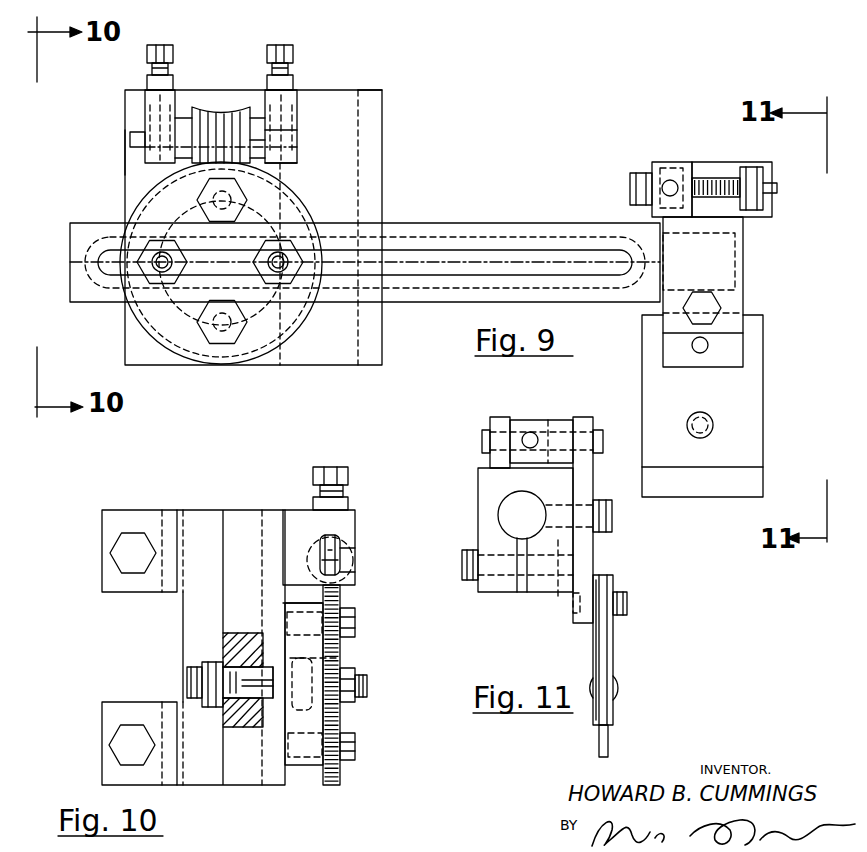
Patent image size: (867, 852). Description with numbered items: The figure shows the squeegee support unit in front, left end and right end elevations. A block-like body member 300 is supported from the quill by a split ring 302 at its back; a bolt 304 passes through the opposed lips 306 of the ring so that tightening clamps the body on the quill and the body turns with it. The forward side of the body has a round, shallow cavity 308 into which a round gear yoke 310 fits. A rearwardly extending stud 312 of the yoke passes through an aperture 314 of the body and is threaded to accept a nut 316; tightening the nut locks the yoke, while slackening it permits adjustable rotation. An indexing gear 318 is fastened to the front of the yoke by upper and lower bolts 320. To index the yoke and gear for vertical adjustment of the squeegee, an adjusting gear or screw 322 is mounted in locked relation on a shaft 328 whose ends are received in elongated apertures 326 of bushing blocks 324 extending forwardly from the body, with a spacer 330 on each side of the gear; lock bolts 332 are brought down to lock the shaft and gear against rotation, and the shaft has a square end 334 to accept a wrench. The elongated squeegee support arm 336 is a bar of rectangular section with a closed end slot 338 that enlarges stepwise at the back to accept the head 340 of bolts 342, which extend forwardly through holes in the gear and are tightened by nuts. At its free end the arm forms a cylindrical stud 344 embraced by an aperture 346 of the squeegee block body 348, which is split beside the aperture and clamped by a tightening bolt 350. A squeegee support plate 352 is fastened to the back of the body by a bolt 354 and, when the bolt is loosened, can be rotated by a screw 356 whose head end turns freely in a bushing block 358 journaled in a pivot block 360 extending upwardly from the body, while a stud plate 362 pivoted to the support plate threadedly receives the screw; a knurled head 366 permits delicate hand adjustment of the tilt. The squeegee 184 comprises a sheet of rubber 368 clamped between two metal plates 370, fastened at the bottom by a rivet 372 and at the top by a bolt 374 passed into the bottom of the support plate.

In FIG. 11, the squeegee 184 is at (620, 647).
In FIG. 9, the body member 300 is at (125, 152).
In FIG. 10, the body member 300 is at (225, 510).
In FIG. 9, the split ring 302 is at (382, 115).
In FIG. 10, the bolt 304 is at (112, 553).
In FIG. 9, the lips 306 is at (376, 90).
In FIG. 10, the lips 306 is at (102, 520).
In FIG. 10, the cavity 308 is at (270, 762).
In FIG. 9, the gear yoke 310 is at (148, 312).
In FIG. 10, the gear yoke 310 is at (310, 605).
In FIG. 10, the stud 312 is at (187, 678).
In FIG. 10, the aperture 314 is at (253, 672).
In FIG. 10, the nut 316 is at (215, 667).
In FIG. 9, the indexing gear 318 is at (150, 185).
In FIG. 10, the indexing gear 318 is at (340, 655).
In FIG. 9, the bolts 320 is at (240, 207).
In FIG. 10, the bolts 320 is at (357, 620).
In FIG. 9, the adjusting gear or screw 322 is at (240, 78).
In FIG. 9, the bushing blocks 324 is at (300, 95).
In FIG. 10, the bushing blocks 324 is at (353, 515).
In FIG. 10, the elongated apertures 326 is at (318, 548).
In FIG. 9, the shaft 328 is at (292, 135).
In FIG. 10, the shaft 328 is at (340, 570).
In FIG. 9, the spacers 330 is at (260, 115).
In FIG. 10, the spacers 330 is at (355, 550).
In FIG. 9, the lock bolts 332 is at (162, 45).
In FIG. 10, the lock bolts 332 is at (313, 475).
In FIG. 9, the square end 334 is at (135, 135).
In FIG. 10, the square end 334 is at (345, 560).
In FIG. 9, the squeegee support arm 336 is at (412, 223).
In FIG. 10, the squeegee support arm 336 is at (318, 714).
In FIG. 9, the closed end slot 338 is at (470, 256).
In FIG. 10, the head 340 is at (300, 660).
In FIG. 9, the bolts 342 is at (162, 258).
In FIG. 10, the bolts 342 is at (367, 686).
In FIG. 9, the cylindrical stud 344 is at (735, 267).
In FIG. 9, the aperture 346 is at (735, 245).
In FIG. 11, the aperture 346 is at (502, 505).
In FIG. 9, the squeegee block body 348 is at (740, 307).
In FIG. 11, the squeegee block body 348 is at (478, 470).
In FIG. 11, the tightening bolt 350 is at (470, 580).
In FIG. 11, the squeegee support plate 352 is at (593, 490).
In FIG. 11, the bolt 354 is at (612, 518).
In FIG. 9, the screw 356 is at (715, 178).
In FIG. 11, the screw 356 is at (530, 432).
In FIG. 9, the bushing block 358 is at (668, 162).
In FIG. 9, the pivot block 360 is at (640, 173).
In FIG. 11, the pivot block 360 is at (505, 417).
In FIG. 9, the stud plate 362 is at (752, 167).
In FIG. 11, the stud plate 362 is at (583, 420).
In FIG. 9, the knurled head 366 is at (652, 205).
In FIG. 9, the sheet of rubber 368 is at (763, 473).
In FIG. 11, the sheet of rubber 368 is at (608, 748).
In FIG. 9, the metal plates 370 is at (763, 420).
In FIG. 11, the metal plates 370 is at (593, 645).
In FIG. 11, the rivet 372 is at (620, 682).
In FIG. 11, the bolt 374 is at (627, 600).